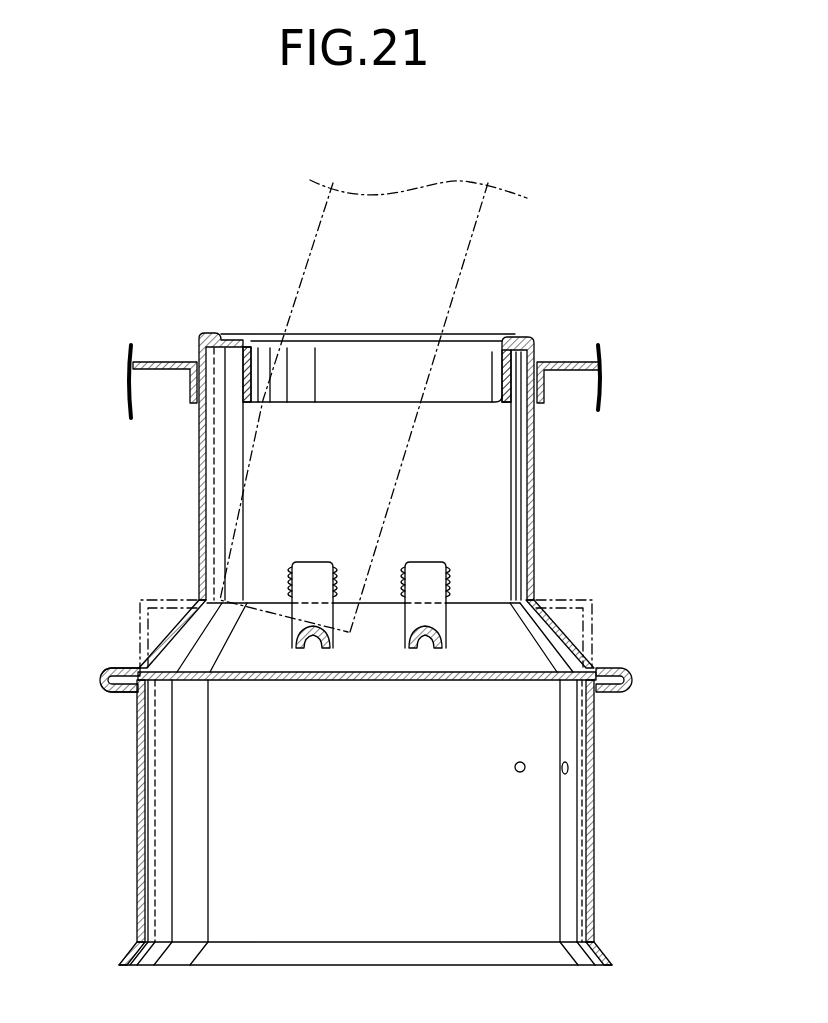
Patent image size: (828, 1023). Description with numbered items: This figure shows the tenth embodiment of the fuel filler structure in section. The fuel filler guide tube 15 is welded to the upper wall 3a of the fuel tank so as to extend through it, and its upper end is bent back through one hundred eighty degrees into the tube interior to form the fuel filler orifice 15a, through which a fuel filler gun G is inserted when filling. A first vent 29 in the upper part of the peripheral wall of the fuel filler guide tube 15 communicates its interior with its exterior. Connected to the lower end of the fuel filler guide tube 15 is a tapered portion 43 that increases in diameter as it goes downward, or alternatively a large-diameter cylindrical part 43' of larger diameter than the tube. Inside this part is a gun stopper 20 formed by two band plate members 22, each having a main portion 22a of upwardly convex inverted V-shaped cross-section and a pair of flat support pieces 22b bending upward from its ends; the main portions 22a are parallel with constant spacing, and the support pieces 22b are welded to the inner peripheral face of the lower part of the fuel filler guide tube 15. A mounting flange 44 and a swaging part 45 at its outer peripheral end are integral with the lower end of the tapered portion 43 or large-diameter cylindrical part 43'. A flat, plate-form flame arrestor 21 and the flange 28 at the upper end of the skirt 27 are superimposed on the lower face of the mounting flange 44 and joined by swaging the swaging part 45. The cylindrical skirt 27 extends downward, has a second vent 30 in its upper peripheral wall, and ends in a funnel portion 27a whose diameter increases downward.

The fuel filler gun G is at (313, 243).
The upper wall 3a is at (573, 363).
The fuel filler guide tube 15 is at (534, 527).
The fuel filler orifice 15a is at (503, 376).
The gun stopper 20 is at (367, 473).
The flame arrestor 21 is at (213, 733).
The band plate member 22 is at (317, 575).
The main portion 22a is at (307, 647).
The support piece 22b is at (312, 590).
The skirt 27 is at (597, 790).
The funnel portion 27a is at (598, 948).
The flange 28 is at (98, 681).
The first vent 29 is at (534, 440).
The second vent 30 is at (522, 772).
The tapered portion 43 is at (399, 636).
The large-diameter cylindrical part 43' is at (395, 607).
The mounting flange 44 is at (122, 668).
The swaging part 45 is at (123, 694).